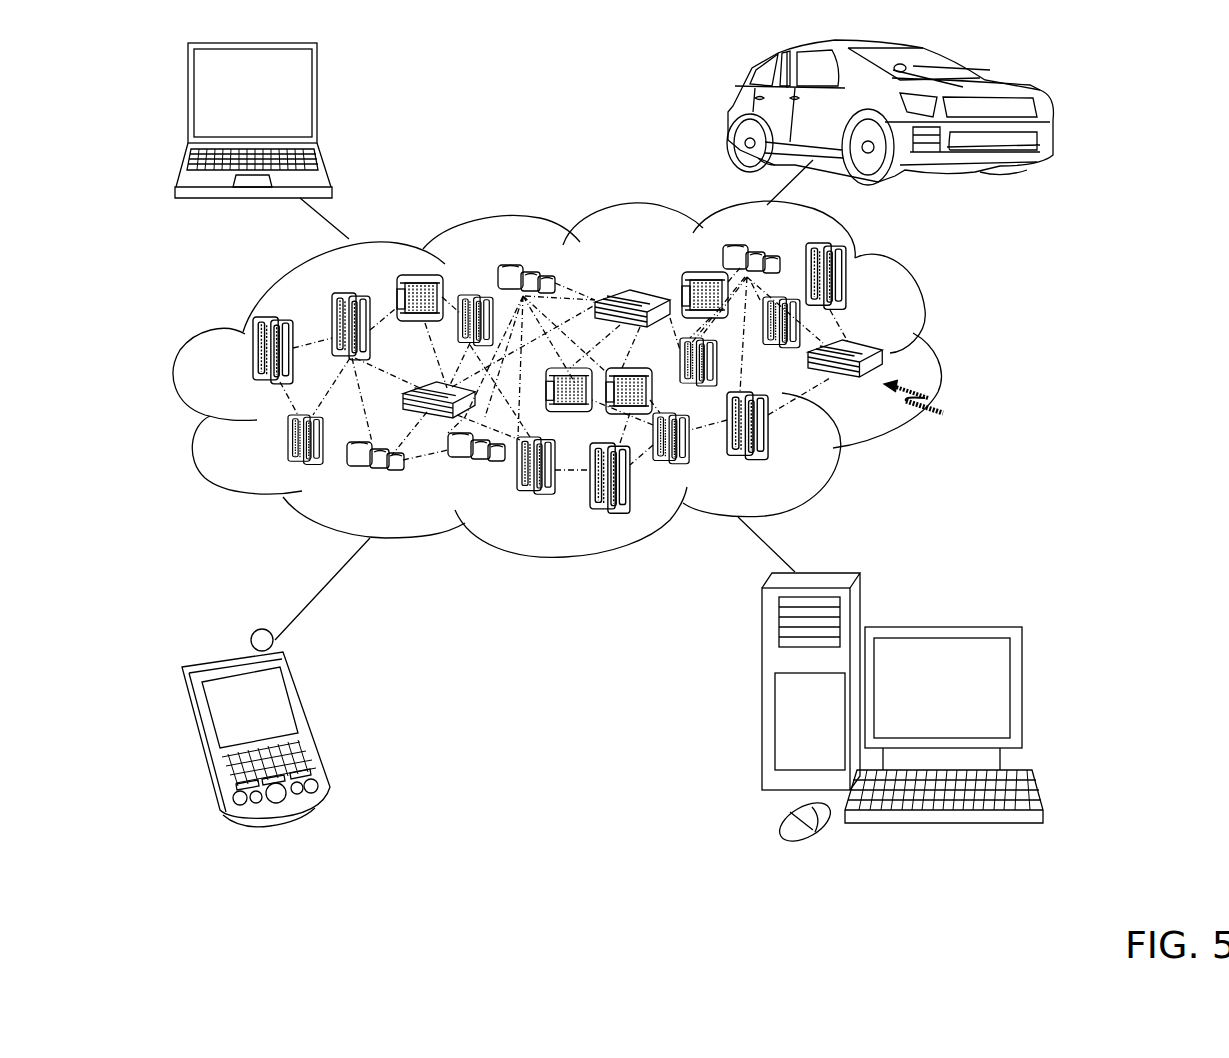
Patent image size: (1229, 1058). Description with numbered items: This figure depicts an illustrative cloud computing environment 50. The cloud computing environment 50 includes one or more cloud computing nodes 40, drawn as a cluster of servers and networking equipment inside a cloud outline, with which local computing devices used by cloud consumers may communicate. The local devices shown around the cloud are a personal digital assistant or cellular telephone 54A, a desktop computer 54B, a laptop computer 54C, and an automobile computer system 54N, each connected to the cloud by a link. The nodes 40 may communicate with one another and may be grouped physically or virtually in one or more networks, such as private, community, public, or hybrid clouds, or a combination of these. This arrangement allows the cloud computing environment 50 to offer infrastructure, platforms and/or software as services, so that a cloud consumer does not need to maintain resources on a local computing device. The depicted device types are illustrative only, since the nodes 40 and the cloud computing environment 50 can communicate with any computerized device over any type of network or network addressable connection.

The cloud computing nodes 40 is at (932, 404).
The cloud computing environment 50 is at (938, 362).
The personal digital assistant (PDA) or cellular telephone 54A is at (313, 720).
The desktop computer 54B is at (940, 627).
The laptop computer 54C is at (318, 99).
The automobile computer system 54N is at (731, 113).